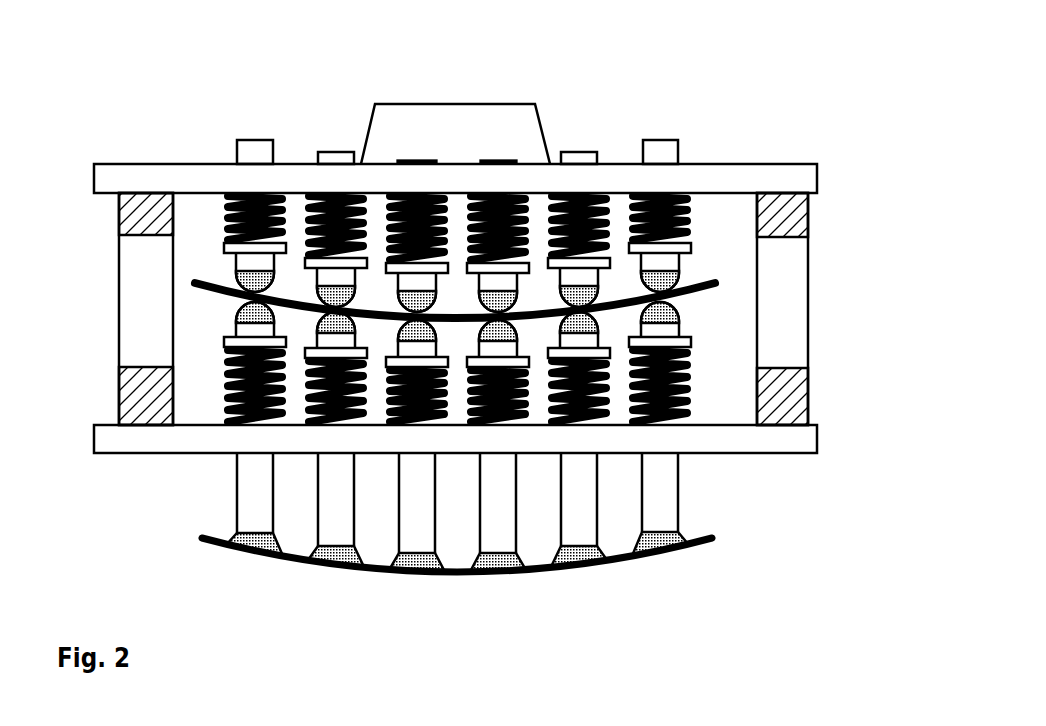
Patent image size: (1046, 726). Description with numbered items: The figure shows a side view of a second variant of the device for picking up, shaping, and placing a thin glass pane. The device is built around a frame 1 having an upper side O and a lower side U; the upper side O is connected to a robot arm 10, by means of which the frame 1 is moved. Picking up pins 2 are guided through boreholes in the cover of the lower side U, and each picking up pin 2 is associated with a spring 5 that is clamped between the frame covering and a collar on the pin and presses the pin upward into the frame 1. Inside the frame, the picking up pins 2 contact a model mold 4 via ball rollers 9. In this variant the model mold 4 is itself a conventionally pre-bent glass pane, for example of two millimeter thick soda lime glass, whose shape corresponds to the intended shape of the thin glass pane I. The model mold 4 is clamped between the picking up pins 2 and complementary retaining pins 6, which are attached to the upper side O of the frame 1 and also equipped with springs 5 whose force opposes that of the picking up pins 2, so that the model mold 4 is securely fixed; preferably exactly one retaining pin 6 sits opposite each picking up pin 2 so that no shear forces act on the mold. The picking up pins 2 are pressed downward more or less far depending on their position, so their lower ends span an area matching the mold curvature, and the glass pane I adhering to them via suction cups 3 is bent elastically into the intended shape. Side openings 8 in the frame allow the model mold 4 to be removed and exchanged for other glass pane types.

The frame 1 is at (150, 110).
The picking up pins 2 is at (257, 487).
The suction cups 3 is at (682, 540).
The model mold 4 is at (714, 287).
The springs 5 is at (693, 223).
The retaining pins 6 is at (680, 149).
The side openings 8 is at (785, 265).
The ball rollers 9 is at (680, 313).
The robot arm 10 is at (485, 138).
The upper side O is at (100, 166).
The lower side U is at (125, 438).
The glass pane I is at (682, 546).